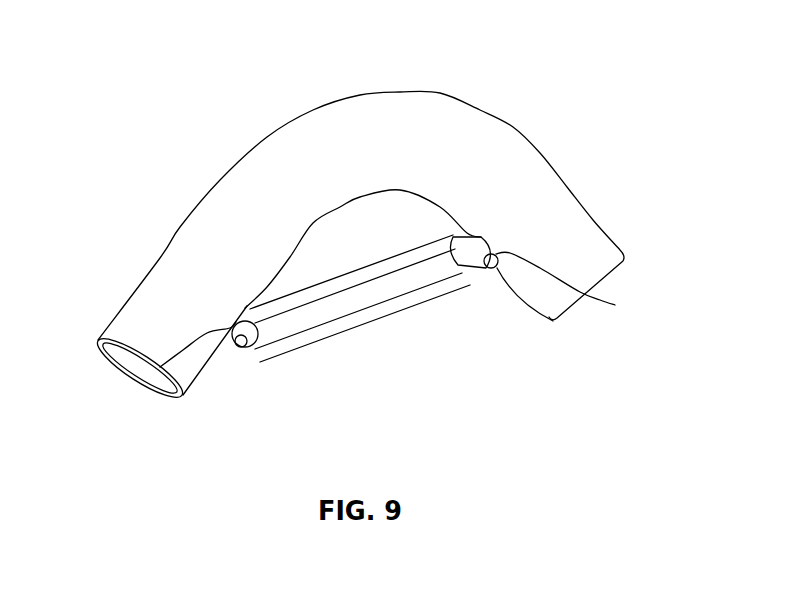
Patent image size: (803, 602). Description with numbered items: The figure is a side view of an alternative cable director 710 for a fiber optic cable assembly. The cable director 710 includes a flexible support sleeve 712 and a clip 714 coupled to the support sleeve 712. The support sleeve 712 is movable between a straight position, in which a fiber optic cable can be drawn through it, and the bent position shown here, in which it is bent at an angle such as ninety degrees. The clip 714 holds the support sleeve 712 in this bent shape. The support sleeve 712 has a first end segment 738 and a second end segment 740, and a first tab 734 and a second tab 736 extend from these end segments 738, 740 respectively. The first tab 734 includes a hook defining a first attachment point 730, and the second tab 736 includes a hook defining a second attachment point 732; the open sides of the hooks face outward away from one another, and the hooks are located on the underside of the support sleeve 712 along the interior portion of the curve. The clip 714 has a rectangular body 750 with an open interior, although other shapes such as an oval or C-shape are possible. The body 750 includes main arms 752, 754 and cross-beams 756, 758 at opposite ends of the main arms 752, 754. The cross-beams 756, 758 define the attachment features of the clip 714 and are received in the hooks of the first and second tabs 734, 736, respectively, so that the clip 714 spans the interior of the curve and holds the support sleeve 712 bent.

The cable director 710 is at (462, 51).
The support sleeve 712 is at (322, 126).
The clip 714 is at (372, 316).
The first attachment point 730 is at (250, 355).
The second attachment point 732 is at (615, 305).
The first tab 734 is at (142, 379).
The second tab 736 is at (488, 268).
The first end segment 738 is at (141, 282).
The second end segment 740 is at (591, 208).
The body 750 is at (308, 340).
The main arm 752 is at (425, 297).
The main arm 754 is at (367, 271).
The cross-beam 756 is at (233, 347).
The cross-beam 758 is at (497, 265).